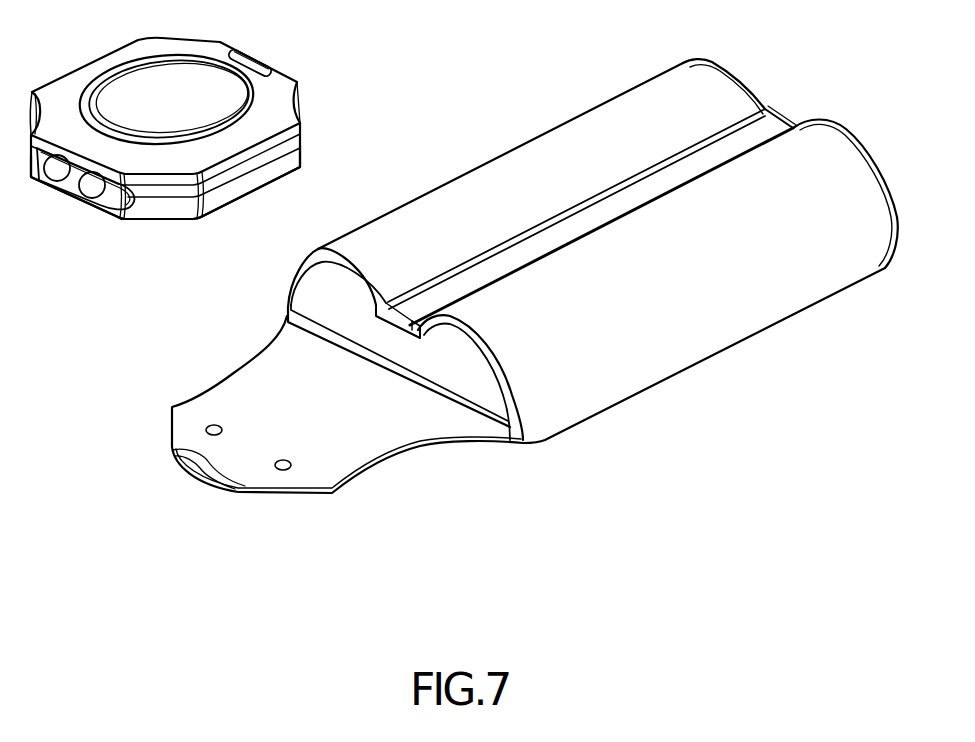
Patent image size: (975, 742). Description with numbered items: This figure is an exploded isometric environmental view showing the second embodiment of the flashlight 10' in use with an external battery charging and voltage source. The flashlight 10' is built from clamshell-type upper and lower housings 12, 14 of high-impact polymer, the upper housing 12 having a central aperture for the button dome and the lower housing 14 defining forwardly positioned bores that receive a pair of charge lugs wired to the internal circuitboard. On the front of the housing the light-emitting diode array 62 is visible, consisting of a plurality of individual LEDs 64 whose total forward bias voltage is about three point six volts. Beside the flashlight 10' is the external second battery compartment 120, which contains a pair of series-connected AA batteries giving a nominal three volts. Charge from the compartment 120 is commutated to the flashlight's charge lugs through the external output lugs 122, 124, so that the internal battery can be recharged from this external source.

The flashlight 10' is at (203, 126).
The upper housing 12 is at (277, 145).
The lower housing 14 is at (262, 167).
The light-emitting diode array 62 is at (20, 190).
The individual LEDs 64 is at (98, 192).
The external second battery compartment 120 is at (725, 335).
The external output lug 122 is at (205, 430).
The external output lug 124 is at (289, 466).